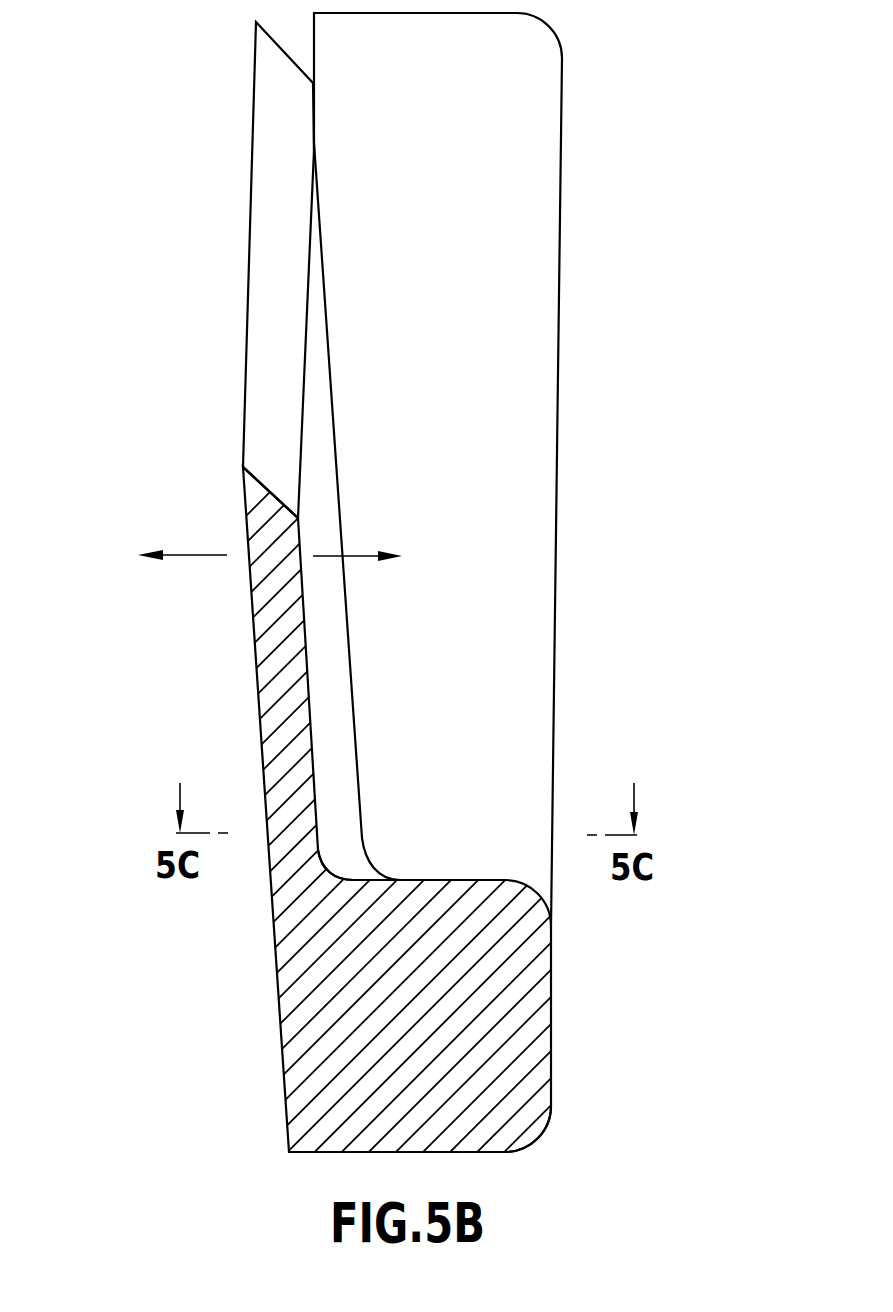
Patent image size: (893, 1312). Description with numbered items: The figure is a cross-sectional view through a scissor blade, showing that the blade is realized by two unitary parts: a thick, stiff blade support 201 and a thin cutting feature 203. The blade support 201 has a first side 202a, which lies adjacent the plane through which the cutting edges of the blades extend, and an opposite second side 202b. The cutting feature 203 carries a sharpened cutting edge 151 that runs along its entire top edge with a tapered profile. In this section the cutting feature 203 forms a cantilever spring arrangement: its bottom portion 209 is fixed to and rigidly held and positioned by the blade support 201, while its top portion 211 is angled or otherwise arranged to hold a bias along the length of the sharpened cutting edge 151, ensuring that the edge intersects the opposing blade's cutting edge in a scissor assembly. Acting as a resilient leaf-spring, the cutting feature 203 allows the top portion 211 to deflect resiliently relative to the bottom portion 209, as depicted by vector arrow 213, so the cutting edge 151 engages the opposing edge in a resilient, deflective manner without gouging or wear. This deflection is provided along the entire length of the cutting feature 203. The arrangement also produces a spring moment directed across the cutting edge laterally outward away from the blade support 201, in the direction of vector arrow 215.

The sharpened cutting edge 151 is at (247, 300).
The blade support 201 is at (538, 988).
The first side 202a is at (292, 1047).
The second side 202b is at (551, 1067).
The cutting feature 203 is at (262, 622).
The bottom portion 209 is at (275, 880).
The top portion 211 is at (248, 496).
The vector arrow 213 is at (357, 556).
The vector arrow 215 is at (210, 556).